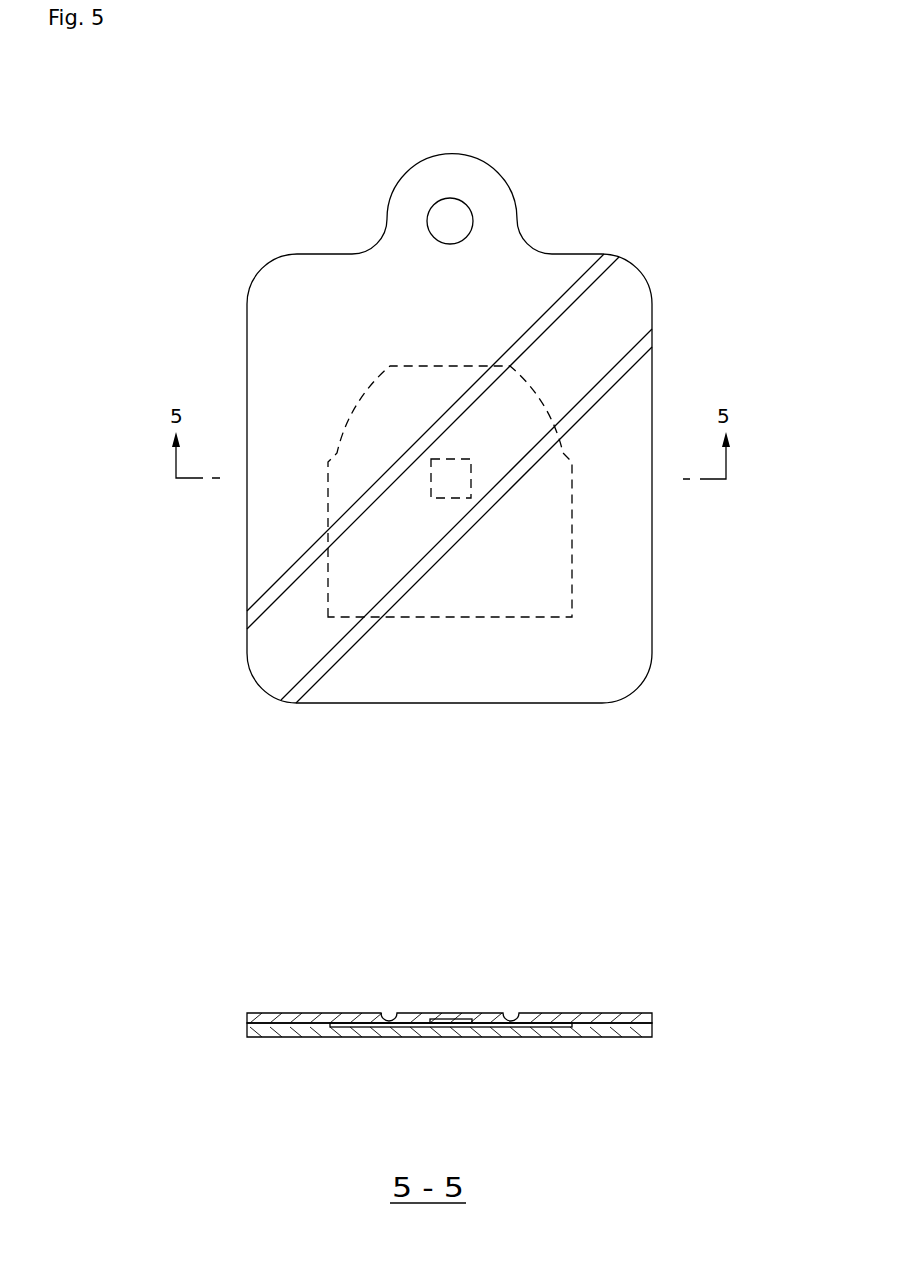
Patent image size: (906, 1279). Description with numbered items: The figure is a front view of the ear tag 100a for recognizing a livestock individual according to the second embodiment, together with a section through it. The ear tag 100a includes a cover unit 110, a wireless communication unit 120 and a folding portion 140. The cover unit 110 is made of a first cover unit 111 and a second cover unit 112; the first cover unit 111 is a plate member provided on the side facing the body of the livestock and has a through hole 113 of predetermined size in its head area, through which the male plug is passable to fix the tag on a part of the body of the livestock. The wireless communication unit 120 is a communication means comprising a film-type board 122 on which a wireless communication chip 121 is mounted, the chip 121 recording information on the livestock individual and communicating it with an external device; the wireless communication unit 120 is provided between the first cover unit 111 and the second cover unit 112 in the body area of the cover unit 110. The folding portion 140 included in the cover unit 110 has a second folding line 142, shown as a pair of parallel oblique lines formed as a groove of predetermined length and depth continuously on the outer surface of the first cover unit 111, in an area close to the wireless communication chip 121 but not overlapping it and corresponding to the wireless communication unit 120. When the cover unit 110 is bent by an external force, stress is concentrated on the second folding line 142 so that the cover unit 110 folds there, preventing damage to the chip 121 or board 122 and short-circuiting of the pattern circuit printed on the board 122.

The ear tag for recognizing livestock individual 100a is at (290, 161).
The cover unit 110 is at (424, 605).
The first cover unit 111 is at (264, 1016).
The second cover unit 112 is at (254, 1029).
The through hole 113 is at (472, 221).
The wireless communication unit 120 is at (450, 757).
The wireless communication chip 121 is at (448, 498).
The board 122 is at (525, 617).
The folding portion 140 is at (494, 565).
The second folding line 142 is at (648, 345).